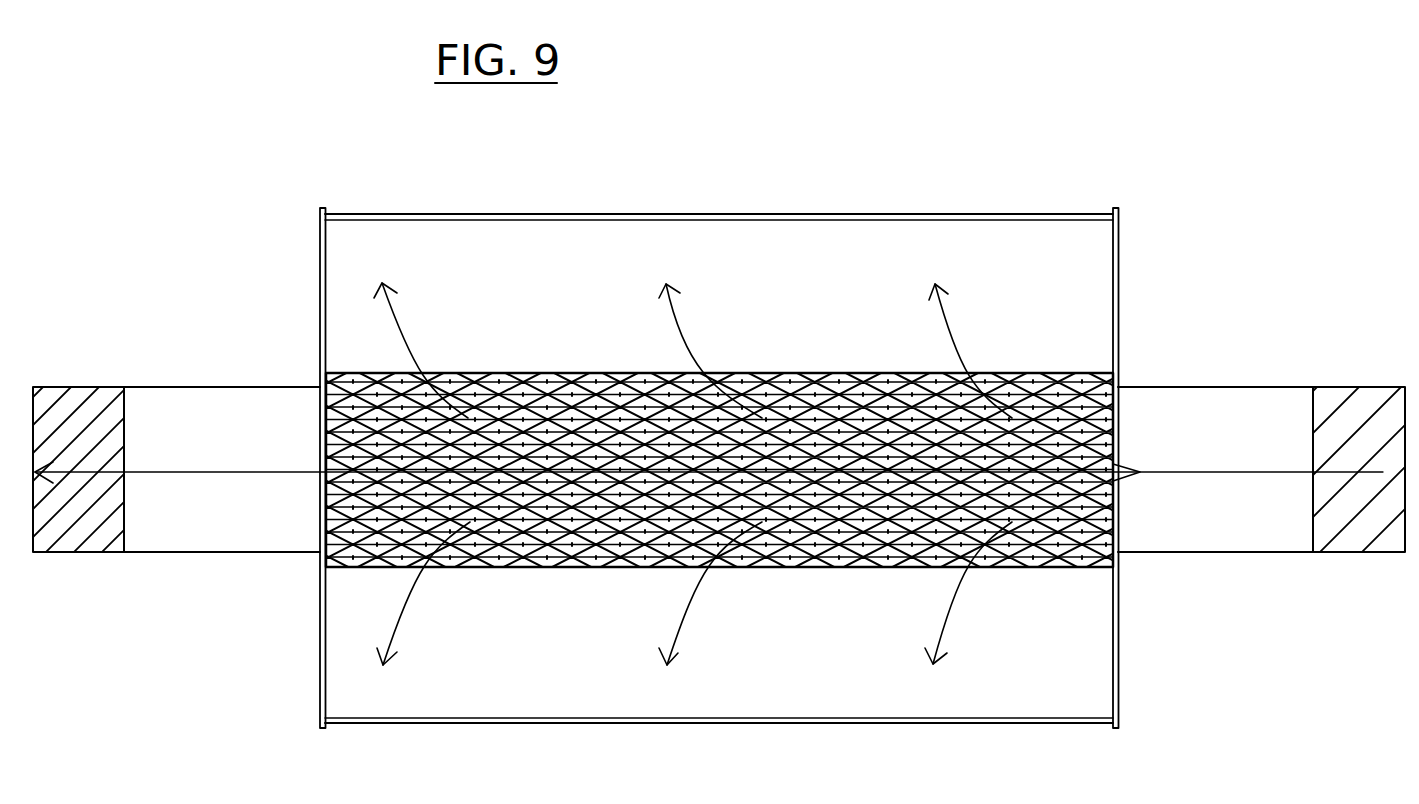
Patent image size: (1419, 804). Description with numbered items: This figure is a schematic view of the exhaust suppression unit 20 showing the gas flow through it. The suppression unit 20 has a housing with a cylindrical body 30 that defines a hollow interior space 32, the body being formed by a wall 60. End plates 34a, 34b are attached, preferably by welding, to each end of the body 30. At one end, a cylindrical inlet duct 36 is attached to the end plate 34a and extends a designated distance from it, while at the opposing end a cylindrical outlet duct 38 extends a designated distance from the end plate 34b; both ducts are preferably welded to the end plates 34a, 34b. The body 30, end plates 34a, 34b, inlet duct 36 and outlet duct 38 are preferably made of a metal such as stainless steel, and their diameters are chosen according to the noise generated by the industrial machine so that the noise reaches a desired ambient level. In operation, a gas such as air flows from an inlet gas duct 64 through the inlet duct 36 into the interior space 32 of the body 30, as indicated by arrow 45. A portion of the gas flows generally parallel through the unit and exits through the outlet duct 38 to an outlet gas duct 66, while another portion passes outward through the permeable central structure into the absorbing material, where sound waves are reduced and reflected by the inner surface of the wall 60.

The suppression unit 20 is at (709, 449).
The cylindrical body 30 is at (709, 449).
The interior space 32 is at (719, 471).
The end plate 34a is at (1162, 459).
The end plate 34b is at (279, 449).
The inlet duct 36 is at (1215, 435).
The outlet duct 38 is at (222, 429).
The arrow 45 is at (709, 443).
The wall 60 is at (719, 187).
The inlet gas duct 64 is at (1366, 432).
The outlet gas duct 66 is at (164, 432).